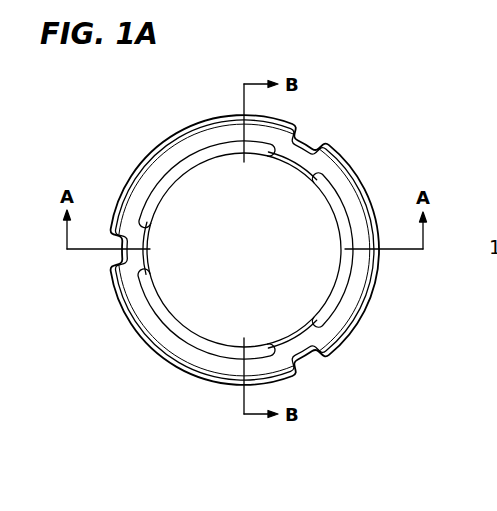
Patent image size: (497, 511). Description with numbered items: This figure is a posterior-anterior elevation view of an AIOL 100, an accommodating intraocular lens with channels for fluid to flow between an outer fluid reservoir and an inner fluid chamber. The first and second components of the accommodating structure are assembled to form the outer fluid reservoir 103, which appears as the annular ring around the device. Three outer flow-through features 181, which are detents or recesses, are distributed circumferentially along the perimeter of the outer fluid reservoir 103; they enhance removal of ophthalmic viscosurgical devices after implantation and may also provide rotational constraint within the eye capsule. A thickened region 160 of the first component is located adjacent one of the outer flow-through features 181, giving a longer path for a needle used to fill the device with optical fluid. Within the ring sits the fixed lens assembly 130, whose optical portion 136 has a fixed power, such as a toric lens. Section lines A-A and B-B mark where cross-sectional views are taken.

The AIOL 100 is at (122, 120).
The outer fluid reservoir 103 is at (125, 308).
The fixed lens assembly 130 is at (305, 162).
The optical portion 136 is at (305, 258).
The thickened region 160 is at (303, 343).
The outer flow-through feature 181 is at (316, 128).